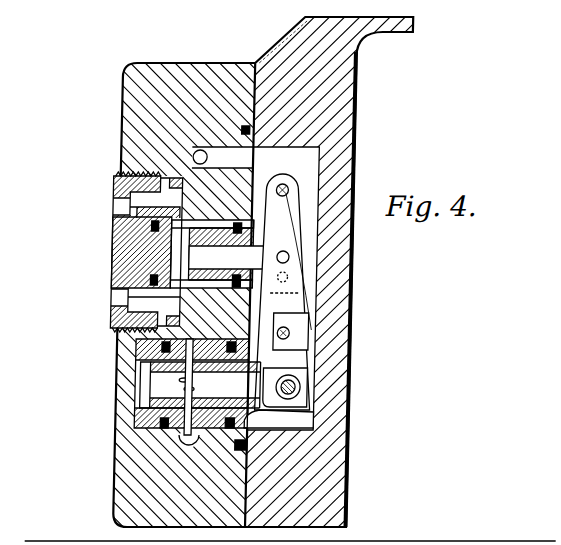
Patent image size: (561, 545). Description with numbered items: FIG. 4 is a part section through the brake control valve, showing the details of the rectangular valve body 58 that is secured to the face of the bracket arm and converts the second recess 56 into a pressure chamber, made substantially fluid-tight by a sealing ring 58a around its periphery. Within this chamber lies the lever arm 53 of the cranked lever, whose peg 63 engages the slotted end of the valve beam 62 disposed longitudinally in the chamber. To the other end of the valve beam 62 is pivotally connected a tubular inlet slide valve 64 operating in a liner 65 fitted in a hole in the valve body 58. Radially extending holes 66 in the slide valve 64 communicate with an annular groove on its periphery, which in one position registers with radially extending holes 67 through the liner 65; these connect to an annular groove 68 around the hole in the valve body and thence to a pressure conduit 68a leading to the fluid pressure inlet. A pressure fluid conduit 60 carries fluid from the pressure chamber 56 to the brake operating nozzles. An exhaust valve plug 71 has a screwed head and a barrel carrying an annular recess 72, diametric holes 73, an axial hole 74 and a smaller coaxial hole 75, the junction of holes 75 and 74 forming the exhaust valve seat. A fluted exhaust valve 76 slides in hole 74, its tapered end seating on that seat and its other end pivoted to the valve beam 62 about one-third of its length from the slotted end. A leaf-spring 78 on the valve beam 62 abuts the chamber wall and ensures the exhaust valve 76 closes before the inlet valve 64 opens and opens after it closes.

The lever arm 53 is at (332, 268).
The second recess (pressure chamber) 56 is at (305, 160).
The valve body 58 is at (203, 76).
The sealing ring 58a is at (242, 125).
The pressure fluid conduit 60 is at (188, 152).
The valve beam 62 is at (283, 228).
The peg 63 is at (296, 214).
The tubular inlet slide valve 64 is at (313, 413).
The liner 65 is at (248, 421).
The radially extending holes 66 is at (181, 380).
The radially extending holes 67 is at (138, 420).
The annular groove 68 is at (137, 340).
The pressure conduit 68a is at (188, 440).
The exhaust valve plug 71 is at (112, 232).
The annular recess 72 is at (211, 228).
The diametric holes 73 is at (112, 270).
The axial hole 74 is at (276, 172).
The smaller coaxial hole 75 is at (112, 252).
The exhaust valve 76 is at (312, 297).
The leaf-spring 78 is at (310, 328).